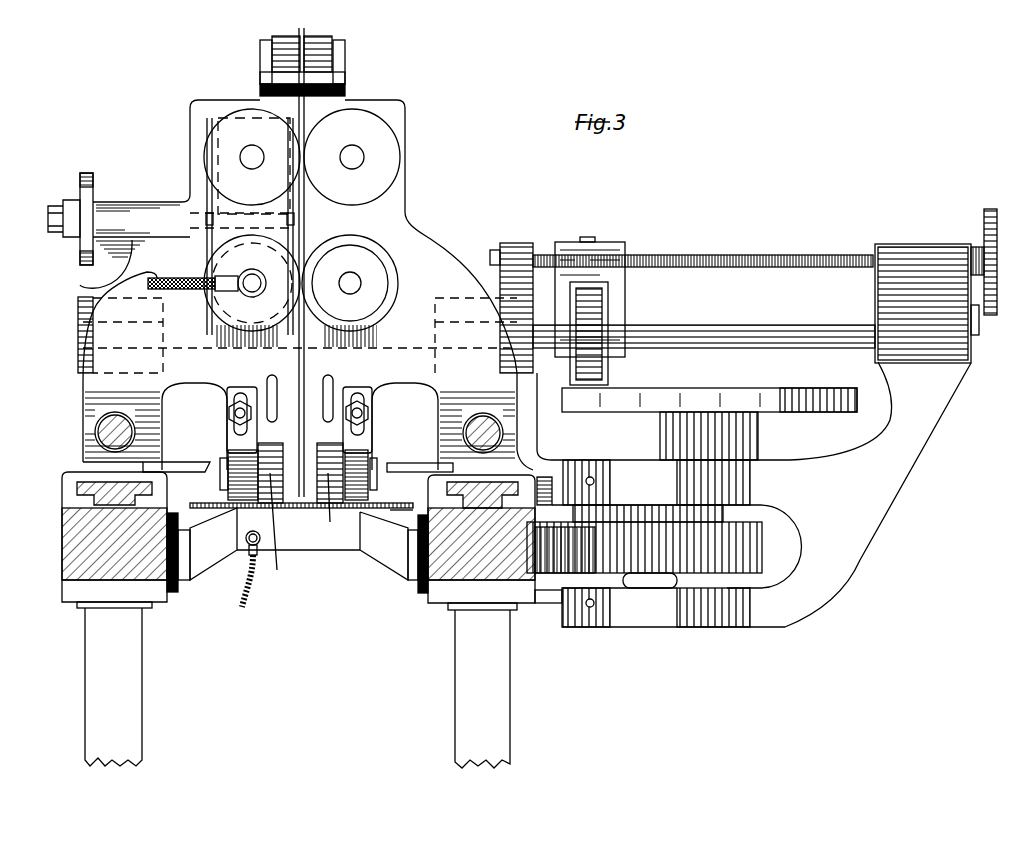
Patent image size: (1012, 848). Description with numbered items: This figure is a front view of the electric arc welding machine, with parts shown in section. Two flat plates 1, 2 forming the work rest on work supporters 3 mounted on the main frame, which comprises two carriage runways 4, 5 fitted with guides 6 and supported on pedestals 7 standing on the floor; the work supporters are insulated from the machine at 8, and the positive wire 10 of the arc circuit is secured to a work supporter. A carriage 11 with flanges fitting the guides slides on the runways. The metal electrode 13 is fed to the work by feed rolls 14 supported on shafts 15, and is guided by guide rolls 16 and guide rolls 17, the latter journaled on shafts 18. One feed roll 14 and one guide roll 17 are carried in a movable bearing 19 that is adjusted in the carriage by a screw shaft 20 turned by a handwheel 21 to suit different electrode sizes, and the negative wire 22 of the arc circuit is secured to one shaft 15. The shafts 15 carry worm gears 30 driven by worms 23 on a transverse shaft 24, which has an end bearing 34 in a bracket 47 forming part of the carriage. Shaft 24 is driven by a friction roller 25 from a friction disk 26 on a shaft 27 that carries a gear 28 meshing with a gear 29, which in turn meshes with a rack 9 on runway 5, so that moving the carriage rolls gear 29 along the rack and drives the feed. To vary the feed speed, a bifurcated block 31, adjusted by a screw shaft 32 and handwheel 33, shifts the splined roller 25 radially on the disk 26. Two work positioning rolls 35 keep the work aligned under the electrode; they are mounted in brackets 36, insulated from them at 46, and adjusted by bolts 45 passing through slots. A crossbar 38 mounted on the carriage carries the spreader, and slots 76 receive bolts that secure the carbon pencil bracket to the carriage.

The flat plate 1 is at (198, 505).
The flat plate 2 is at (394, 508).
The work supporter 3 is at (302, 546).
The carriage runway 4 is at (75, 545).
The carriage runway 5 is at (468, 540).
The guide 6 is at (92, 490).
The pedestal 7 is at (297, 688).
The insulation 8 is at (177, 592).
The rack 9 is at (520, 530).
The positive wire 10 is at (246, 586).
The carriage 11 is at (362, 221).
The metal electrode 13 is at (300, 34).
The feed roll 14 is at (301, 283).
The shaft 15 is at (252, 290).
The guide roll 16 is at (318, 40).
The guide roll 17 is at (302, 157).
The shaft 18 is at (250, 163).
The movable bearing 19 is at (220, 202).
The screw shaft 20 is at (48, 221).
The handwheel 21 is at (80, 186).
The negative wire 22 is at (80, 285).
The worm 23 is at (232, 348).
The transverse shaft 24 is at (78, 338).
The friction roller 25 is at (592, 316).
The friction disk 26 is at (690, 393).
The shaft 27 is at (700, 510).
The gear 28 is at (738, 548).
The gear 29 is at (587, 547).
The worm gear 30 is at (207, 265).
The bifurcated block 31 is at (598, 276).
The screw shaft 32 is at (775, 257).
The handwheel 33 is at (984, 226).
The end bearing 34 is at (916, 325).
The work positioning roll 35 is at (306, 534).
The bracket 36 is at (230, 436).
The crossbar 38 is at (82, 463).
The bolt 45 is at (234, 414).
The insulation 46 is at (222, 448).
The bracket 47 is at (754, 495).
The slot 76 is at (323, 385).